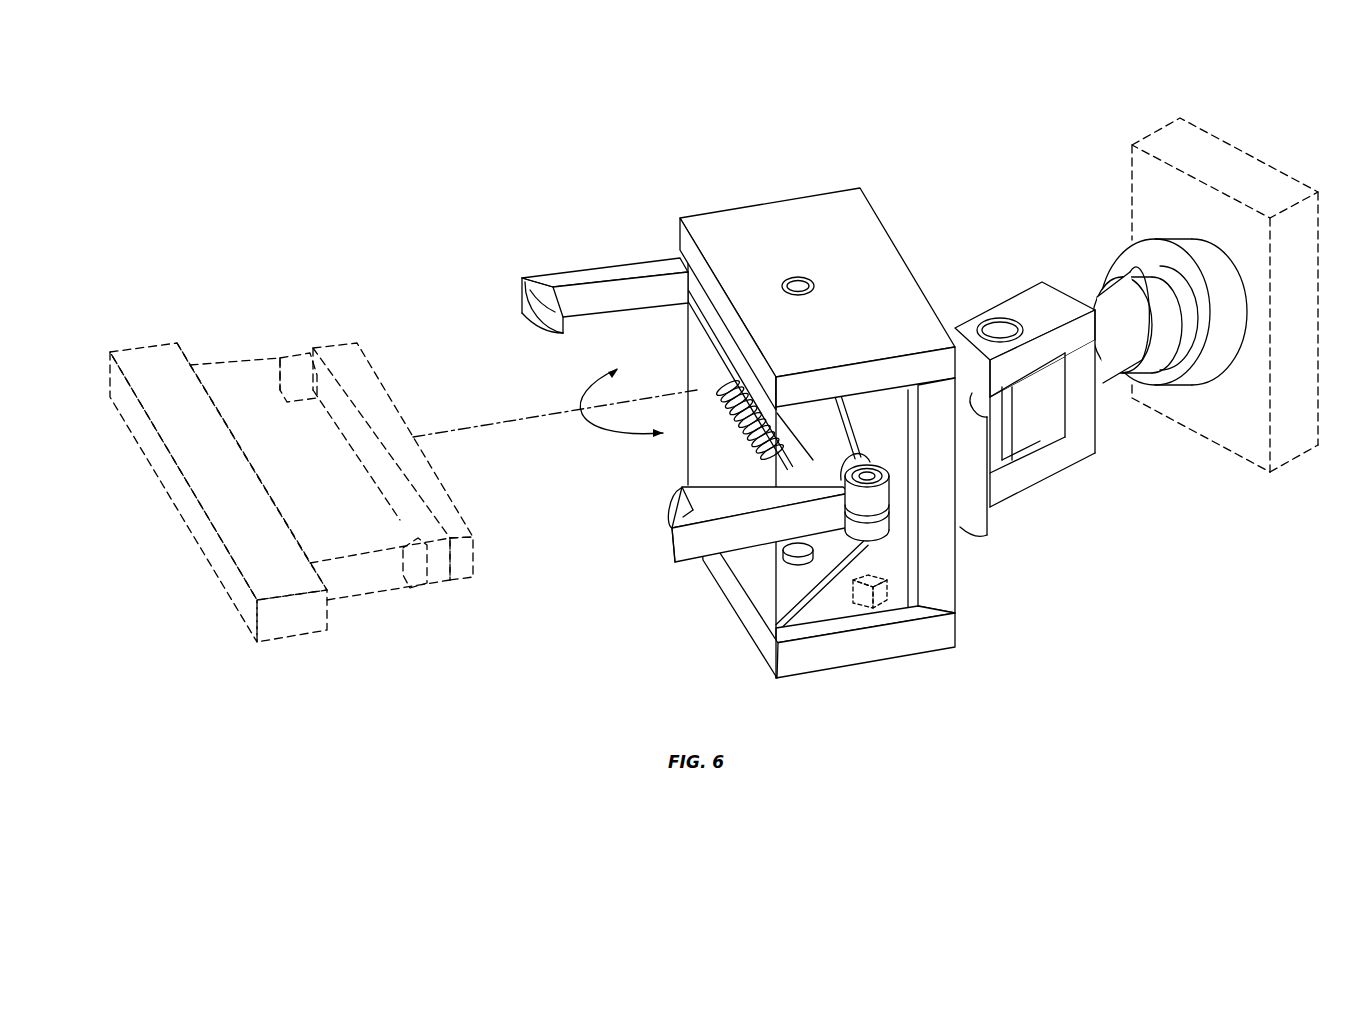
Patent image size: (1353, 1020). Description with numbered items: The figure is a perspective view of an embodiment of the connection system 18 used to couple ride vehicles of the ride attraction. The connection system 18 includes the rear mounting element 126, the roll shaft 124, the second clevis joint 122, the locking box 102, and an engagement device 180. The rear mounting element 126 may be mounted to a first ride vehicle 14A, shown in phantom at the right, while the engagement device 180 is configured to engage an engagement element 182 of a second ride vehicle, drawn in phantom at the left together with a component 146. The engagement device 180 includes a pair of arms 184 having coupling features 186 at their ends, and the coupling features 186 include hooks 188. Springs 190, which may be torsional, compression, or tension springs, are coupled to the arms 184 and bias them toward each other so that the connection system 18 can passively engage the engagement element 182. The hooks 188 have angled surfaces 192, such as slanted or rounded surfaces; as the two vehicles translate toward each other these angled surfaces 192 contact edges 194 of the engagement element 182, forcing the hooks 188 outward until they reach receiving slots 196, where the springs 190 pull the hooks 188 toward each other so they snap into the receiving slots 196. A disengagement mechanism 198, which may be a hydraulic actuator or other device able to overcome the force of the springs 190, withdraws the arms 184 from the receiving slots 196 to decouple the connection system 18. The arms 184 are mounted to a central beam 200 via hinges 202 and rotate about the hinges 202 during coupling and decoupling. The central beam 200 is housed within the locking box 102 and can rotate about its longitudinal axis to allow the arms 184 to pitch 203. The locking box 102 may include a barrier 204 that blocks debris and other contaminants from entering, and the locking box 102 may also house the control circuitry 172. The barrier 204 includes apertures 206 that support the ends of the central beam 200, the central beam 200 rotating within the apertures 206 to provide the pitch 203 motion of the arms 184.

The connection system 18 is at (830, 407).
The locking box 102 is at (768, 200).
The engagement device 180 is at (652, 411).
The arms 184 is at (614, 268).
The coupling features 186 is at (661, 574).
The hooks 188 is at (537, 330).
The angled surfaces 192 is at (540, 309).
The disengagement mechanism 198 is at (690, 285).
The springs 190 is at (743, 402).
The apertures 206 is at (841, 448).
The central beam 200 is at (932, 578).
The hinges 202 is at (885, 528).
The barrier 204 is at (893, 600).
The control circuitry 172 is at (873, 607).
The pitch 203 is at (586, 415).
The second clevis joint 122 is at (1043, 488).
The roll shaft 124 is at (1105, 383).
The rear mounting element 126 is at (1130, 257).
The first ride vehicle 14A is at (1202, 180).
The tray 146 is at (290, 471).
The engagement element 182 is at (337, 343).
The edges 194 is at (313, 348).
The receiving slots 196 is at (301, 367).